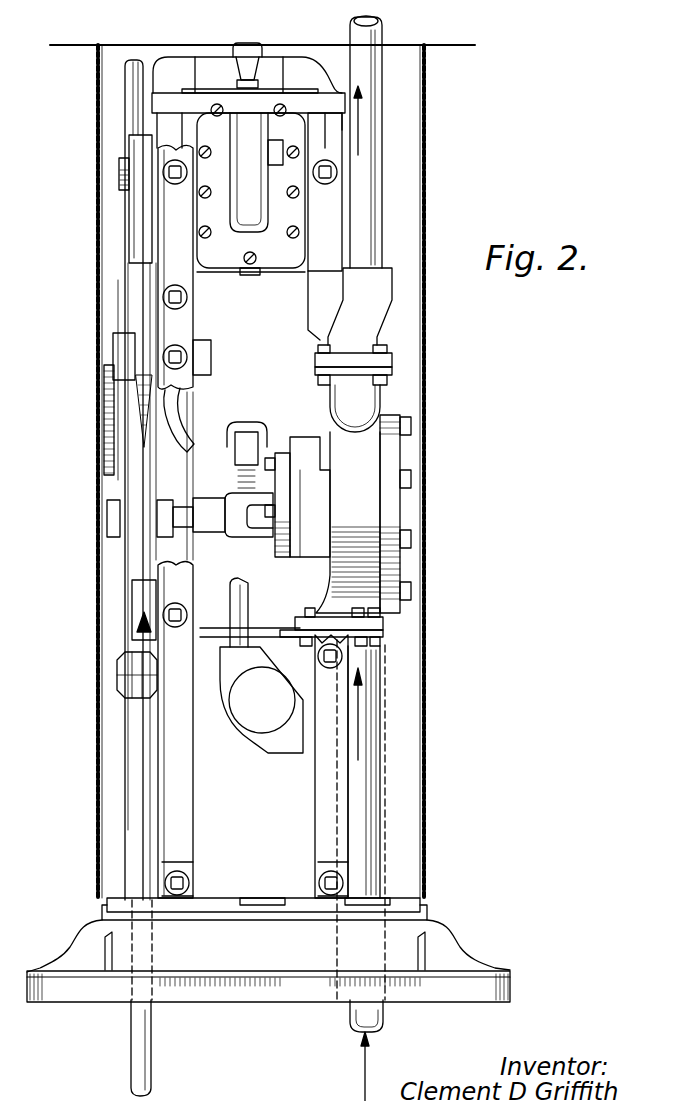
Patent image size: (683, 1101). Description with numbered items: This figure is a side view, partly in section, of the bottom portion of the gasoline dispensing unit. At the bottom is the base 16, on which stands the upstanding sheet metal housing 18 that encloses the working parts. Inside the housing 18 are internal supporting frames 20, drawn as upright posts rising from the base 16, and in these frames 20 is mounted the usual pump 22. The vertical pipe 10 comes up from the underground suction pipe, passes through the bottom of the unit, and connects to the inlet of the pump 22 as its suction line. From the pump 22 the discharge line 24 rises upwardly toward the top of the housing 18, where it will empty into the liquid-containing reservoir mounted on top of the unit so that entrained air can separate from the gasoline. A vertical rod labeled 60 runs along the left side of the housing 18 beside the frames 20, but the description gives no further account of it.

The vertical pipe 10 is at (373, 843).
The base 16 is at (457, 942).
The sheet metal housing 18 is at (427, 545).
The internal supporting frames 20 is at (328, 793).
The pump 22 is at (345, 457).
The discharge line 24 is at (363, 180).
The rod 60 is at (130, 94).